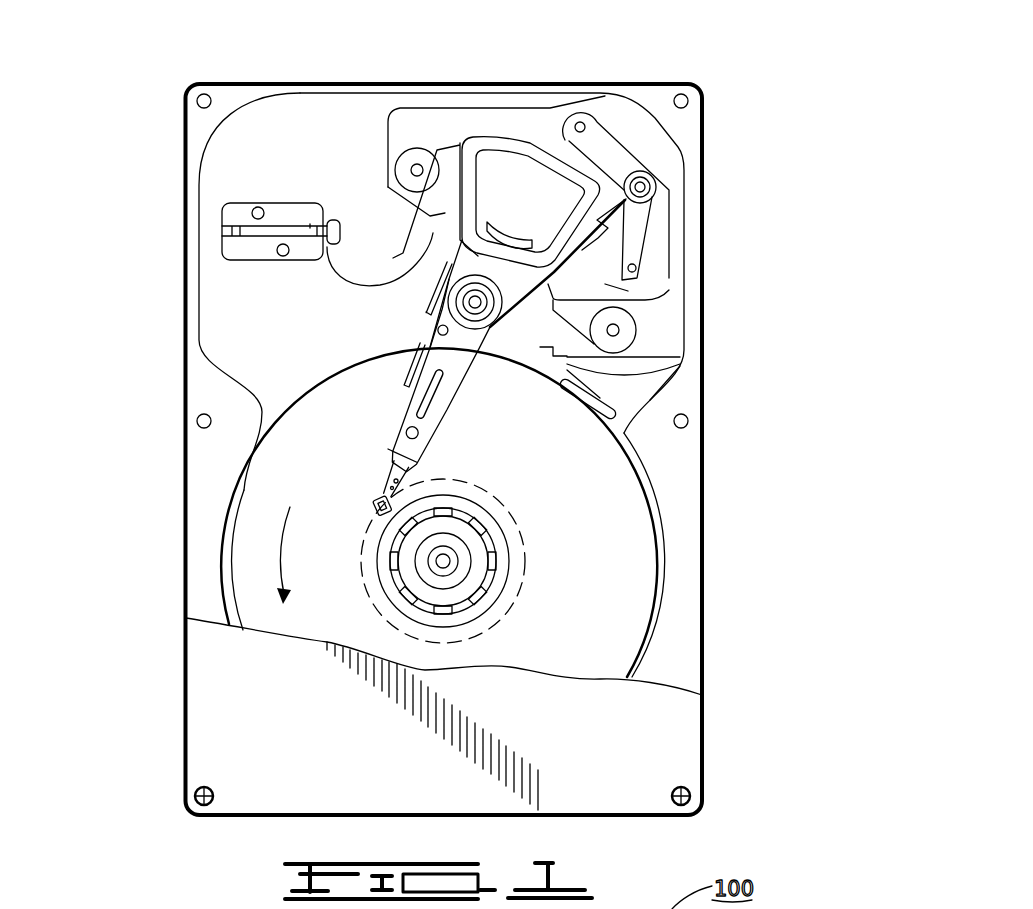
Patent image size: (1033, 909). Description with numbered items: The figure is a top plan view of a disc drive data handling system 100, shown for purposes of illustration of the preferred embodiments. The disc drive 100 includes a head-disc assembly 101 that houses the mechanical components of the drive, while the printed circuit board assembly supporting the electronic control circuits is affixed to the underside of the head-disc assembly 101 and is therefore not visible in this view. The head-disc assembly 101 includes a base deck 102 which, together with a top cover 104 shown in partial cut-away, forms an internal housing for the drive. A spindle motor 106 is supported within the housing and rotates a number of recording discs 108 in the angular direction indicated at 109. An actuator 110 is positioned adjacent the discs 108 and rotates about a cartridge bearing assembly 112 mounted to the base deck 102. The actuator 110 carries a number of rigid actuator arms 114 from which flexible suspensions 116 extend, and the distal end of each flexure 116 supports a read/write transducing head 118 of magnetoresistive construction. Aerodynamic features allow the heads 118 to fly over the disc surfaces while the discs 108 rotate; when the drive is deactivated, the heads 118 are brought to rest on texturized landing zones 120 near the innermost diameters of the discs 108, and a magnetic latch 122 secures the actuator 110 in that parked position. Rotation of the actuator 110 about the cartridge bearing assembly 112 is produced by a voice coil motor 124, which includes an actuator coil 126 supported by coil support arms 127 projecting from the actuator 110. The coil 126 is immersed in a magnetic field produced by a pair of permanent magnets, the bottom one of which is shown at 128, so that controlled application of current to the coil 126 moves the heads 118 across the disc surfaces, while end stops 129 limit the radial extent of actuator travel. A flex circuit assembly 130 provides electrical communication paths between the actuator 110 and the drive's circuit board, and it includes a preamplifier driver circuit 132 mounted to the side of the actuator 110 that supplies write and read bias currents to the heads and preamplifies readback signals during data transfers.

The disc drive data handling system 100 is at (193, 60).
The head-disc assembly 101 is at (251, 161).
The base deck 102 is at (230, 307).
The top cover 104 is at (225, 697).
The spindle motor 106 is at (475, 545).
The recording discs 108 is at (640, 572).
The angular direction 109 is at (287, 545).
The actuator 110 is at (455, 344).
The cartridge bearing assembly 112 is at (490, 303).
The rigid actuator arms 114 is at (440, 407).
The flexible suspensions 116 is at (387, 467).
The read/write transducing head 118 is at (375, 497).
The texturized landing zones 120 is at (512, 612).
The magnetic latch 122 is at (640, 232).
The voice coil motor 124 is at (525, 119).
The actuator coil 126 is at (490, 140).
The coil support arms 127 is at (455, 158).
The permanent magnet 128 is at (669, 298).
The end stops 129 is at (410, 158).
The flex circuit assembly 130 is at (347, 287).
The preamplifier driver circuit 132 is at (410, 306).